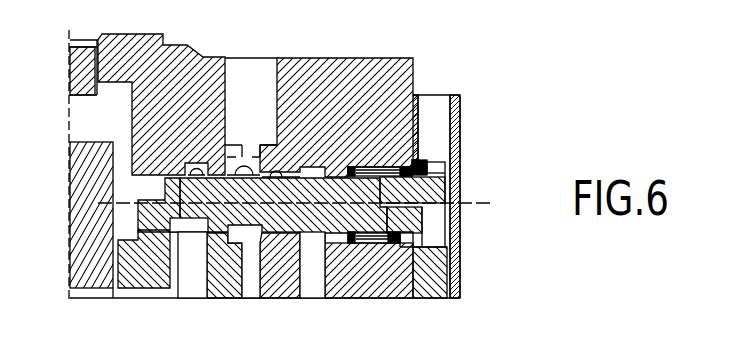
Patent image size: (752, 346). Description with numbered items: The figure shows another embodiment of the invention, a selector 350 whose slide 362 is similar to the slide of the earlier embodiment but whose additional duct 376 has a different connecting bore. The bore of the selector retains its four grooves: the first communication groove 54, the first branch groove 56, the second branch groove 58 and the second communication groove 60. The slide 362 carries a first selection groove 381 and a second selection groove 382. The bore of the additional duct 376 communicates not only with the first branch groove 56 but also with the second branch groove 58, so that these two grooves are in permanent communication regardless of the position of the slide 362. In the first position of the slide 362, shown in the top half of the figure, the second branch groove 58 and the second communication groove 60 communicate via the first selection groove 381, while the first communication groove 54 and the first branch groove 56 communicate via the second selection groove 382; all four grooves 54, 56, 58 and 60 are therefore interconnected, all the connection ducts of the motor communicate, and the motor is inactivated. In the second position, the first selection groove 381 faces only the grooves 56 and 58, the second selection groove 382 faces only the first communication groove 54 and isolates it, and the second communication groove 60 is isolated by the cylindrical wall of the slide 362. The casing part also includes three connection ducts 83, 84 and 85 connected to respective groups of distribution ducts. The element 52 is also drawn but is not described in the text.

The additional duct 376 is at (257, 80).
The first communication groove 54 is at (187, 168).
The first branch groove 56 is at (253, 165).
The second branch groove 58 is at (291, 165).
The second communication groove 60 is at (336, 168).
The selector 350 is at (469, 142).
The slide 362 is at (460, 192).
The housing wall 52 is at (145, 190).
The second selection groove 382 is at (210, 186).
The first selection groove 381 is at (297, 188).
The connection duct 83 is at (193, 253).
The connection duct 84 is at (250, 267).
The connection duct 85 is at (313, 275).